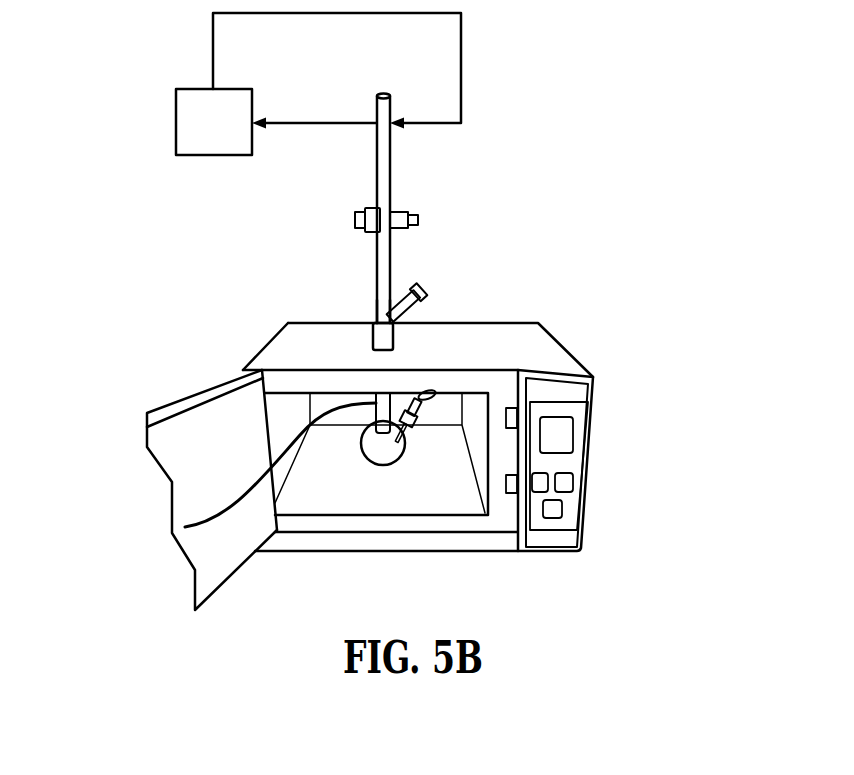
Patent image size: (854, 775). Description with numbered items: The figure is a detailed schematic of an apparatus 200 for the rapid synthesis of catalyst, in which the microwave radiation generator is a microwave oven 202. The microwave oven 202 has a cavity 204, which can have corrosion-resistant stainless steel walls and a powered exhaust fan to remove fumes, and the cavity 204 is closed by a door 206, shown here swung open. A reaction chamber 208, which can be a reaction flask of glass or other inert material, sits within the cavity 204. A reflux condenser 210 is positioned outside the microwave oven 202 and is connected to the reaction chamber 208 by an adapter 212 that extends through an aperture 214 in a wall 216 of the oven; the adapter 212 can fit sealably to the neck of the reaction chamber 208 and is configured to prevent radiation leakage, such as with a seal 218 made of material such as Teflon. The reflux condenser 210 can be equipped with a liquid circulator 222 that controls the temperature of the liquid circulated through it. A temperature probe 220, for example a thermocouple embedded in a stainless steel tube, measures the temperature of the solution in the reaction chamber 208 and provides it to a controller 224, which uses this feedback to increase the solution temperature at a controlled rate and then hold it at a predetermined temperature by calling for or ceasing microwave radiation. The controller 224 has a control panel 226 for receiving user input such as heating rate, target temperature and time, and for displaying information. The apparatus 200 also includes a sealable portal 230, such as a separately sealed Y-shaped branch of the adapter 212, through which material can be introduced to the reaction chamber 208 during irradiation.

The apparatus 200 is at (631, 186).
The microwave oven 202 is at (530, 350).
The cavity 204 is at (460, 488).
The door 206 is at (223, 413).
The reaction chamber 208 is at (378, 466).
The reflux condenser 210 is at (391, 177).
The adapter 212 is at (185, 527).
The aperture 214 is at (378, 347).
The wall 216 is at (293, 342).
The seal 218 is at (398, 337).
The temperature probe 220 is at (418, 403).
The liquid circulator 222 is at (203, 128).
The controller 224 is at (558, 390).
The control panel 226 is at (553, 482).
The sealable portal 230 is at (426, 292).